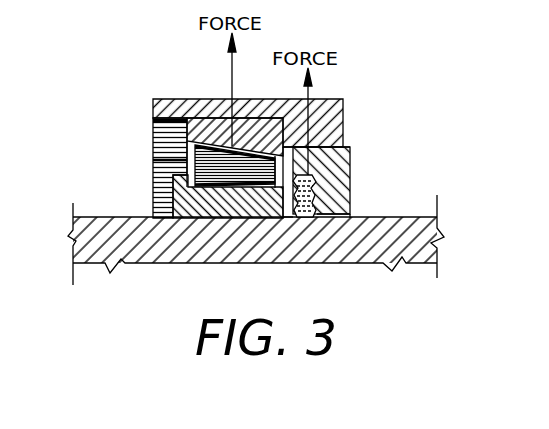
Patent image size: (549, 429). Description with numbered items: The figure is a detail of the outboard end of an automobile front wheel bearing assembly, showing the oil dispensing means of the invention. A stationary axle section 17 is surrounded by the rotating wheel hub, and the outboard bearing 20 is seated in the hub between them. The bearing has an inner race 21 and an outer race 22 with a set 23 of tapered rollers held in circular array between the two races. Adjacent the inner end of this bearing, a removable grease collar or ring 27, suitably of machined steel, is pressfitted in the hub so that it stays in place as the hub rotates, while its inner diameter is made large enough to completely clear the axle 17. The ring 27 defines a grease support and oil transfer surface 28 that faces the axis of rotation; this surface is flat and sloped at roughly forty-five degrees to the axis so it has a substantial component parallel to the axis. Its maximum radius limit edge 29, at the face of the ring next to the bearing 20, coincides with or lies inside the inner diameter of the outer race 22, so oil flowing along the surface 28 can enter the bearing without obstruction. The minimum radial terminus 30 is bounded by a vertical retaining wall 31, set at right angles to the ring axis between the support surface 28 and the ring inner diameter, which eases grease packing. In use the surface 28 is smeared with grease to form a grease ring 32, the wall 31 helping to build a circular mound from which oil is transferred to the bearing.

The axle section 17 is at (193, 265).
The outboard bearing 20 is at (143, 181).
The inner race 21 is at (162, 197).
The outer race 22 is at (160, 135).
The set of tapered rollers 23 is at (162, 160).
The grease collar or ring 27 is at (347, 147).
The grease support and oil transfer surface 28 is at (307, 178).
The maximum radius limit edge 29 is at (280, 152).
The minimum radial terminus 30 is at (304, 186).
The vertical retaining wall 31 is at (314, 203).
The grease ring 32 is at (290, 220).